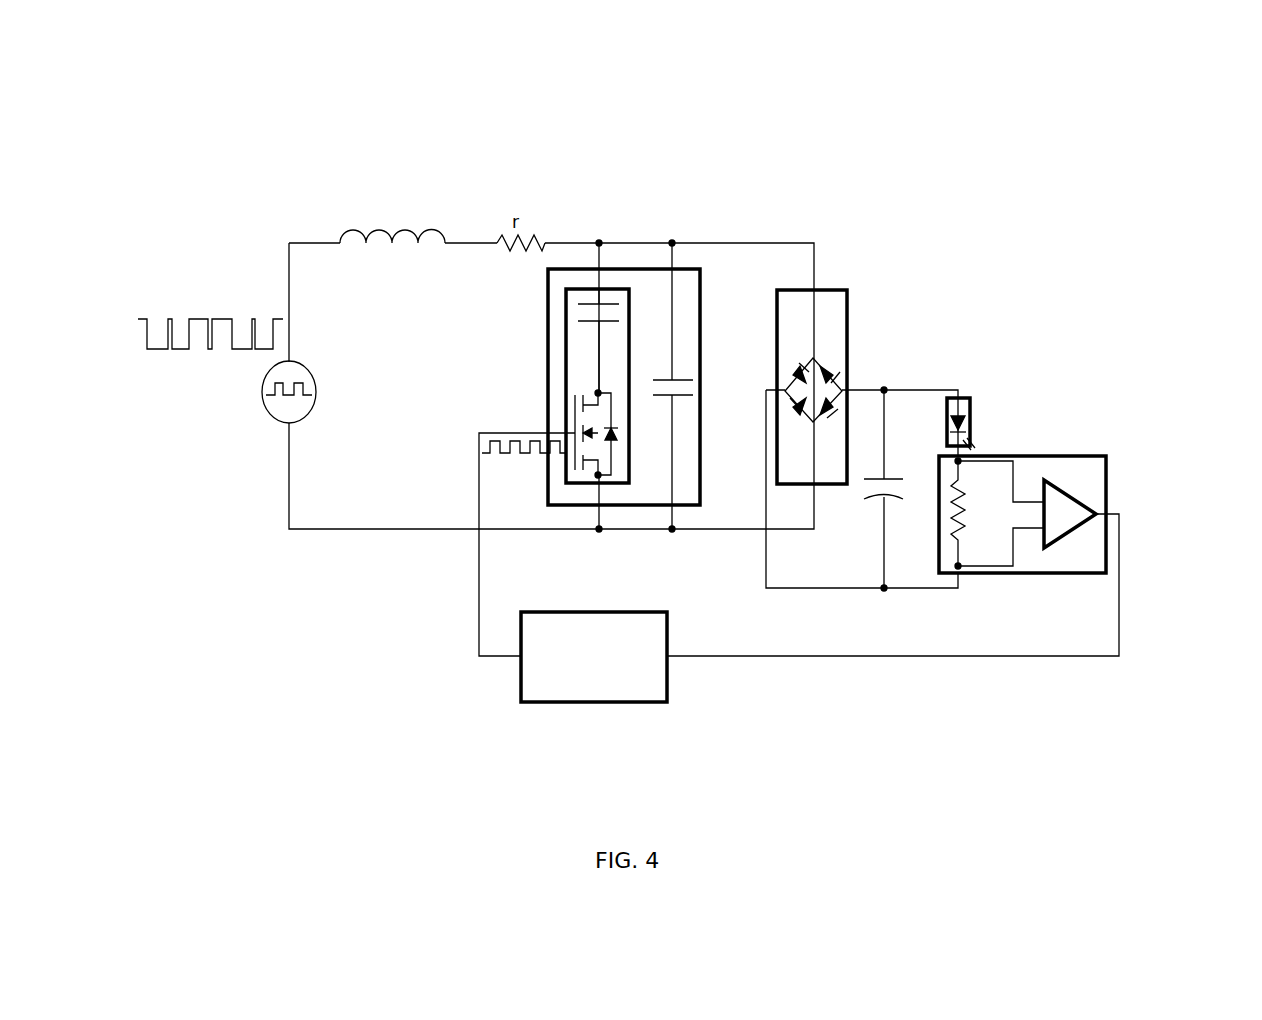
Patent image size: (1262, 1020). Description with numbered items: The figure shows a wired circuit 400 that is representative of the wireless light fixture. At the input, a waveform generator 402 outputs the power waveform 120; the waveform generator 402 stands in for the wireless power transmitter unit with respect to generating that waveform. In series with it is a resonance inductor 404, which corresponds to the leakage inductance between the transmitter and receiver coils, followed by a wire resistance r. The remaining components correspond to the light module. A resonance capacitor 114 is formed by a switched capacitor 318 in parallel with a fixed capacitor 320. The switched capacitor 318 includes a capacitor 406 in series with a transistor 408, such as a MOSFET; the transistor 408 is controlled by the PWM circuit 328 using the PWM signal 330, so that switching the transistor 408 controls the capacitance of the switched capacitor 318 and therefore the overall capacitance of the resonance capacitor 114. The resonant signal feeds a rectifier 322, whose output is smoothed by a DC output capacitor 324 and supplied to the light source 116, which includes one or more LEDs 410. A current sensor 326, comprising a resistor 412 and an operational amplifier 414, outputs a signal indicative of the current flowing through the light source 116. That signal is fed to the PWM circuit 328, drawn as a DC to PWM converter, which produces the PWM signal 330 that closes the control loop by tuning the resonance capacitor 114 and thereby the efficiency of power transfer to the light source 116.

The wired circuit 400 is at (197, 115).
The power waveform 120 is at (198, 318).
The waveform generator 402 is at (278, 417).
The resonance inductor 404 is at (348, 230).
The resonance capacitor 114 is at (548, 367).
The switched capacitor 318 is at (592, 287).
The capacitor 406 is at (607, 303).
The transistor 408 is at (612, 465).
The PWM signal 330 is at (502, 452).
The fixed capacitor 320 is at (677, 378).
The rectifier 322 is at (833, 288).
The DC output capacitor 324 is at (900, 477).
The light source 116 is at (965, 397).
The LED 410 is at (972, 410).
The current sensor 326 is at (1087, 455).
The resistor 412 is at (960, 533).
The operational amplifier 414 is at (1090, 515).
The PWM circuit 328 is at (667, 675).